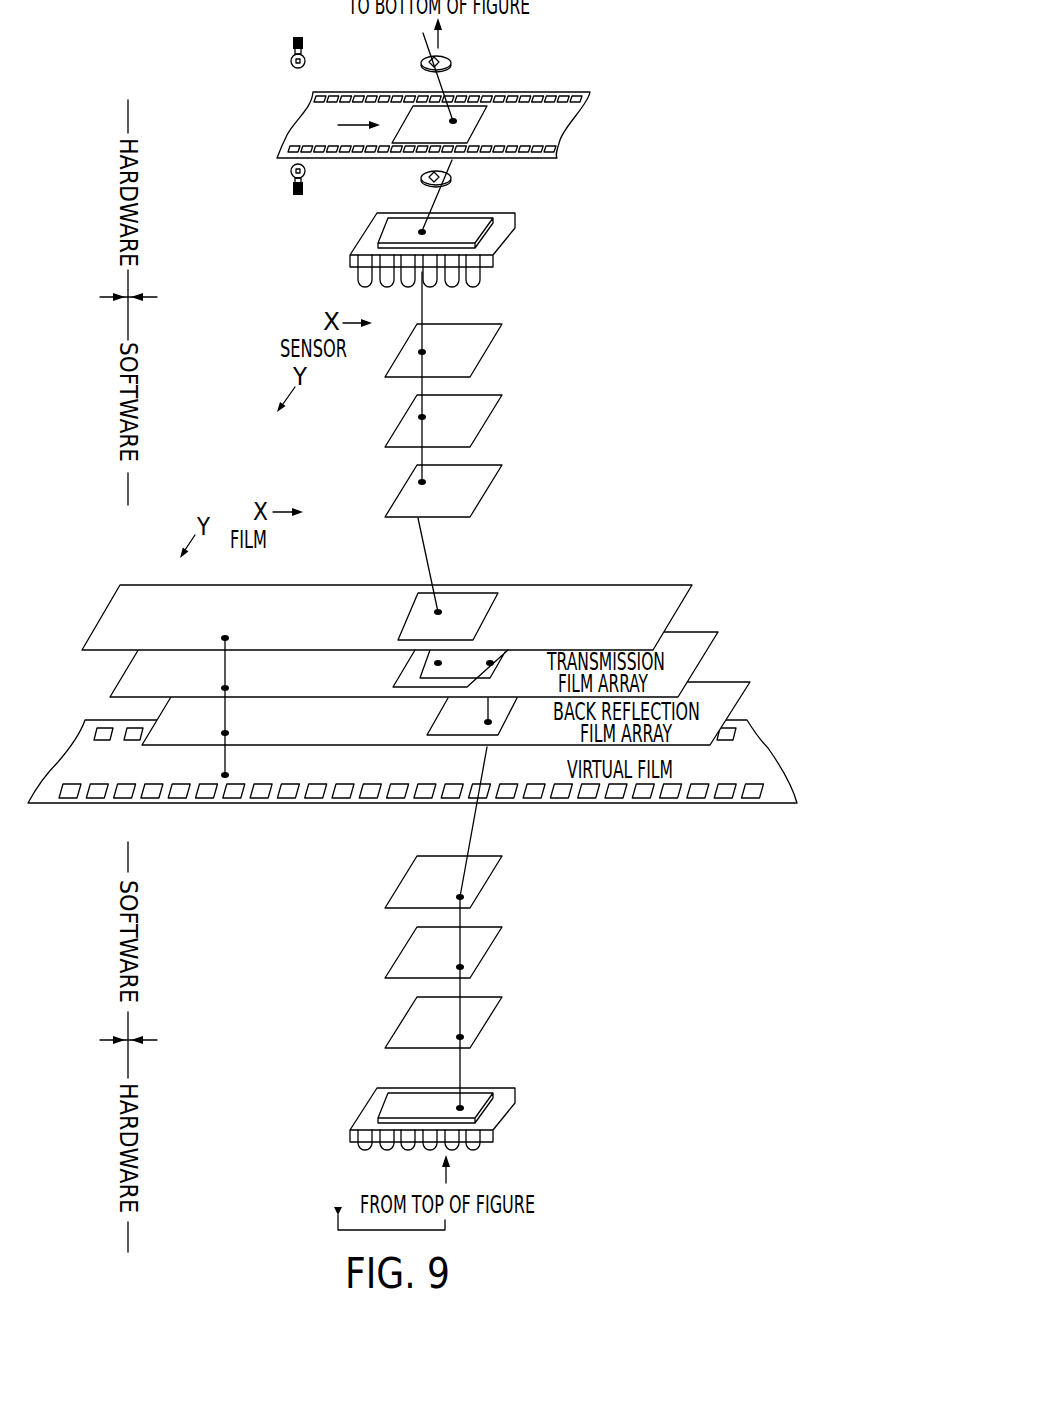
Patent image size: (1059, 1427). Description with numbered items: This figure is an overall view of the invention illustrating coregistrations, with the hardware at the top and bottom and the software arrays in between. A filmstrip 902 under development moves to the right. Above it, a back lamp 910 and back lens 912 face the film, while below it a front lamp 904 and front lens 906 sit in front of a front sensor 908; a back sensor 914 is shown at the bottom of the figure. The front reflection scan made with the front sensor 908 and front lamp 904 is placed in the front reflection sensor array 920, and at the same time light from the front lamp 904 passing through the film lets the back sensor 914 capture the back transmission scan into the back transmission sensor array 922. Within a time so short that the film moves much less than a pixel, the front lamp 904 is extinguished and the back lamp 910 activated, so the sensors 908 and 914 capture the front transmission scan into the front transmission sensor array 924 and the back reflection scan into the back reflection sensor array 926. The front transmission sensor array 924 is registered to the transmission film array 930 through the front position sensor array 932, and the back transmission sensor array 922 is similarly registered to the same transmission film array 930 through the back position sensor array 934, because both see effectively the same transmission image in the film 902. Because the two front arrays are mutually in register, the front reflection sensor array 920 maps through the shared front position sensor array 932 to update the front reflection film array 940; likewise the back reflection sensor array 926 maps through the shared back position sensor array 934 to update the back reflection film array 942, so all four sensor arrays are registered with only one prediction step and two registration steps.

The filmstrip 902 is at (570, 92).
The front lamp 904 is at (290, 173).
The front lens 906 is at (451, 178).
The front sensor 908 is at (472, 227).
The back lamp 910 is at (290, 60).
The back lens 912 is at (450, 60).
The back sensor 914 is at (402, 1093).
The front reflection sensor array 920 is at (482, 324).
The back transmission sensor array 922 is at (400, 953).
The front transmission sensor array 924 is at (482, 395).
The back reflection sensor array 926 is at (400, 1023).
The transmission film array 930 is at (715, 648).
The front position sensor array 932 is at (482, 465).
The back position sensor array 934 is at (400, 883).
The front reflection film array 940 is at (682, 600).
The back reflection film array 942 is at (747, 693).